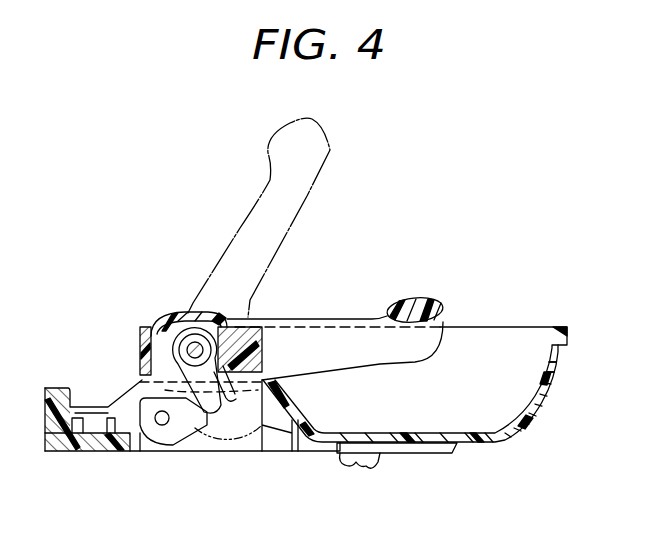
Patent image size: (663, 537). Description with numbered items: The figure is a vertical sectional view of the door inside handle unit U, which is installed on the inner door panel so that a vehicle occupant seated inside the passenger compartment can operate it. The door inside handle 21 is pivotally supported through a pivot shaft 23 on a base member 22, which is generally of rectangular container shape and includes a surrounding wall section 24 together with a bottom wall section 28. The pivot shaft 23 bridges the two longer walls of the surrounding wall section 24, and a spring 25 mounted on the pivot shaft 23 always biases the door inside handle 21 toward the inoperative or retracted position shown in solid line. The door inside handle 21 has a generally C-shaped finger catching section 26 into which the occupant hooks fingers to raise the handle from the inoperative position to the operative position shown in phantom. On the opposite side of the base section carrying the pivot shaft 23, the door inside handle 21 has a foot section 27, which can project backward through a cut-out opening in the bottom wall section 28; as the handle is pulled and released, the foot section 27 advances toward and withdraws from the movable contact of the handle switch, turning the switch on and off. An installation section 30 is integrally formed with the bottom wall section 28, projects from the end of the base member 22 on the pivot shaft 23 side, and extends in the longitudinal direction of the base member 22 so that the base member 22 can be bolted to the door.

The door inside handle 21 is at (348, 318).
The base member 22 is at (500, 325).
The pivot shaft 23 is at (174, 322).
The surrounding wall section 24 is at (553, 362).
The spring 25 is at (238, 352).
The finger catching section 26 is at (393, 310).
The foot section 27 is at (147, 392).
The bottom wall section 28 is at (413, 444).
The installation section 30 is at (133, 452).
The door inside handle unit U is at (531, 452).